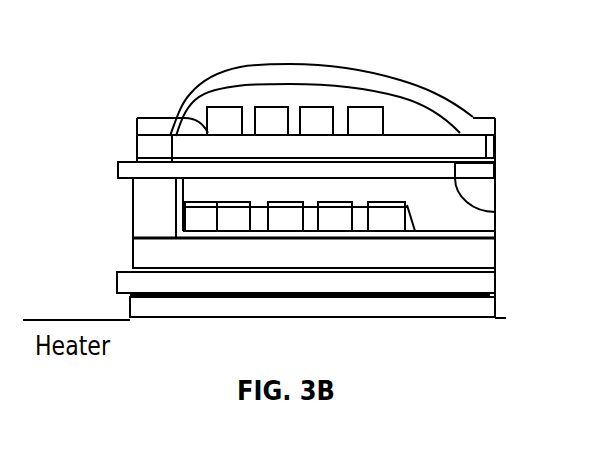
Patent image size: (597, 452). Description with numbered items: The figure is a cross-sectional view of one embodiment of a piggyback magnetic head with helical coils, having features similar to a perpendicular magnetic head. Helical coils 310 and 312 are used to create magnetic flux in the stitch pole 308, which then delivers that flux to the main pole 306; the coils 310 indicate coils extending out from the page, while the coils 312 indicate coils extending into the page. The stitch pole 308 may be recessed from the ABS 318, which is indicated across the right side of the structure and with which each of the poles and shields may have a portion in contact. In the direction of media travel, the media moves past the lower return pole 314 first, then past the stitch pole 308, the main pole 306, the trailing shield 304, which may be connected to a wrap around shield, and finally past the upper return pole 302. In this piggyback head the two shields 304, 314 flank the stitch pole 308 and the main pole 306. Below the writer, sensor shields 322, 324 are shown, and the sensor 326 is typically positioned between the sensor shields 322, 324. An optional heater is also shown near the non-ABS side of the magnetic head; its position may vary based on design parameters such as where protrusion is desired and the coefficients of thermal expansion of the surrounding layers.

The upper return pole 302 is at (433, 90).
The trailing shield 304 is at (495, 145).
The main pole 306 is at (497, 170).
The stitch pole 308 is at (495, 213).
The helical coils 310 is at (155, 118).
The helical coils 312 is at (220, 199).
The lower return pole 314 is at (314, 255).
The ABS 318 is at (503, 243).
The sensor shield 322 is at (117, 277).
The sensor shield 324 is at (130, 310).
The sensor 326 is at (490, 295).